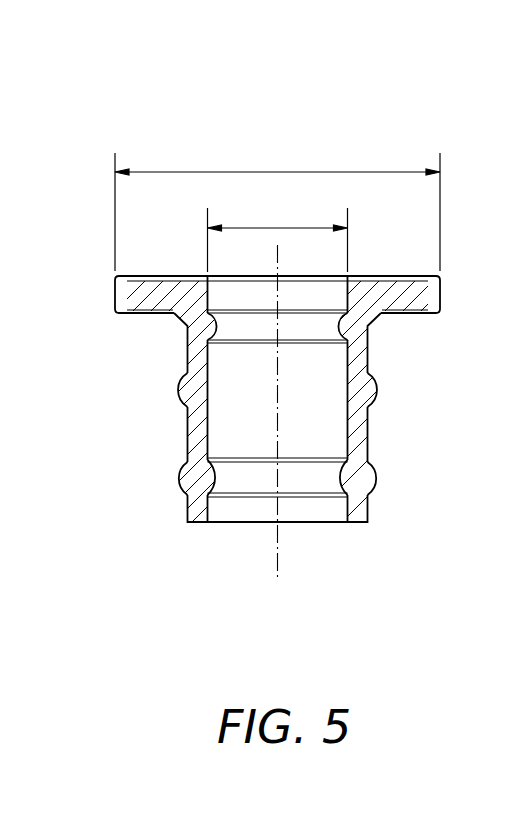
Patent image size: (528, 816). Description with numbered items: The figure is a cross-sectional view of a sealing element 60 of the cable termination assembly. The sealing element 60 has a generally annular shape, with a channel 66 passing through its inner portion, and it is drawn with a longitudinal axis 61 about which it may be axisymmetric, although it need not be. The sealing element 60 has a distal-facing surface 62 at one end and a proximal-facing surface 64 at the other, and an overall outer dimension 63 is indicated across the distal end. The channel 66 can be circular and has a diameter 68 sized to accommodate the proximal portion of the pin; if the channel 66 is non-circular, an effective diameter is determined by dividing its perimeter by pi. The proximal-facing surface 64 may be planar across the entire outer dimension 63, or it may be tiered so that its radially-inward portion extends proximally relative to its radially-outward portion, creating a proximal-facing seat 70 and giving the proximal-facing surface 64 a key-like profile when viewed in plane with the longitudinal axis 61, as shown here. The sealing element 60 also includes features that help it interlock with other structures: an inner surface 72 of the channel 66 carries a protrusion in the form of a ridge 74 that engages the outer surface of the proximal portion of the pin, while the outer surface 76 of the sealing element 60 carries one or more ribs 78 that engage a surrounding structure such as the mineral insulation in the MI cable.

The sealing element 60 is at (264, 408).
The longitudinal axis 61 is at (276, 560).
The distal-facing surface 62 is at (413, 276).
The outer dimension 63 is at (293, 171).
The proximal-facing surface 64 is at (357, 523).
The channel 66 is at (297, 532).
The diameter 68 is at (293, 226).
The proximal-facing seat 70 is at (140, 316).
The inner surface 72 is at (218, 422).
The ridge 74 is at (224, 486).
The outer surface 76 is at (369, 441).
The ribs 78 is at (377, 384).